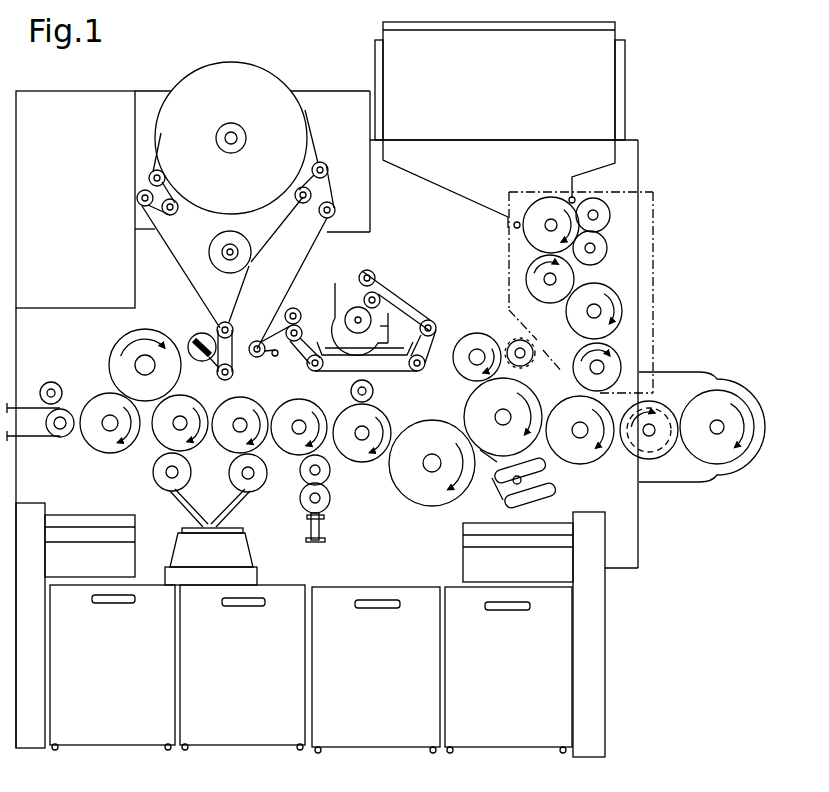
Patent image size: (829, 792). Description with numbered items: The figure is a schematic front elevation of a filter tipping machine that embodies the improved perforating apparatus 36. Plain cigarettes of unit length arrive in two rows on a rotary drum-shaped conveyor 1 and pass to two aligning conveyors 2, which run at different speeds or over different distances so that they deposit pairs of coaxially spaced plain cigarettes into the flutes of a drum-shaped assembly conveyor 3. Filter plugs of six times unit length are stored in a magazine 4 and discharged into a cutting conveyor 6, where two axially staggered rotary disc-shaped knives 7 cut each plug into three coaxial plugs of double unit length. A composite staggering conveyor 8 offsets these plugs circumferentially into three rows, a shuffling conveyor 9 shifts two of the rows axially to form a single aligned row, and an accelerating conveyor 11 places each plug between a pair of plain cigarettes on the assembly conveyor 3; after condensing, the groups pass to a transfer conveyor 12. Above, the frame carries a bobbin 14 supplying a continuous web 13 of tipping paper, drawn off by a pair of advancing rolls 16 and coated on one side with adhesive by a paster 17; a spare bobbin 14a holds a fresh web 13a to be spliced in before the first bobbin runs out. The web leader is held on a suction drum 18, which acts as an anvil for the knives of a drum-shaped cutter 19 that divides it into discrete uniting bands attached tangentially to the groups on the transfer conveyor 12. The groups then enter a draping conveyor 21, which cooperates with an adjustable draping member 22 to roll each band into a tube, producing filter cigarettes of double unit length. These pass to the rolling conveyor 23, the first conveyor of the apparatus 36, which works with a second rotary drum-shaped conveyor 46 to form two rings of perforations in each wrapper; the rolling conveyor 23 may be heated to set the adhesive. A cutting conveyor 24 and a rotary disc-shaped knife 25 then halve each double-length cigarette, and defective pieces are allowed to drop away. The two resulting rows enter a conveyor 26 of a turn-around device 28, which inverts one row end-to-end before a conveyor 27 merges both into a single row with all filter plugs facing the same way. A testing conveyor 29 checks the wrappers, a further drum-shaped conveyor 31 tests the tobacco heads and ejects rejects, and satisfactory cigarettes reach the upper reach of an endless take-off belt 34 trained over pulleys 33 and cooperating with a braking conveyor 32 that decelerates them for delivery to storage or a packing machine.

The rotary drum-shaped conveyor 1 is at (715, 405).
The aligning conveyors 2 is at (662, 448).
The assembly conveyor 3 is at (610, 458).
The magazine 4 is at (508, 87).
The cutting conveyor 6 is at (545, 215).
The rotary disc-shaped knives 7 is at (602, 247).
The staggering conveyor 8 is at (540, 283).
The shuffling conveyor 9 is at (608, 310).
The accelerating conveyor 11 is at (612, 370).
The transfer conveyor 12 is at (507, 449).
The web of tipping paper 13 is at (335, 192).
The fresh web 13a is at (184, 268).
The bobbin 14 is at (235, 267).
The spare bobbin 14a is at (297, 133).
The advancing rolls 16 is at (288, 326).
The paster 17 is at (352, 306).
The suction drum 18 is at (471, 347).
The cutter 19 is at (512, 343).
The draping conveyor 21 is at (412, 494).
The draping member 22 is at (487, 470).
The rolling conveyor 23 is at (362, 462).
The cutting conveyor 24 is at (293, 455).
The rotary disc-shaped knife 25 is at (325, 484).
The drum-shaped conveyor 26 is at (228, 440).
The drum-shaped conveyor 27 is at (166, 442).
The turn-around device 28 is at (248, 516).
The testing conveyor 29 is at (119, 359).
The drum-shaped conveyor 31 is at (95, 408).
The braking conveyor 32 is at (51, 382).
The pulleys 33 is at (62, 438).
The take-off belt 34 is at (38, 438).
The apparatus 36 is at (345, 397).
The second rotary drum-shaped conveyor 46 is at (374, 391).